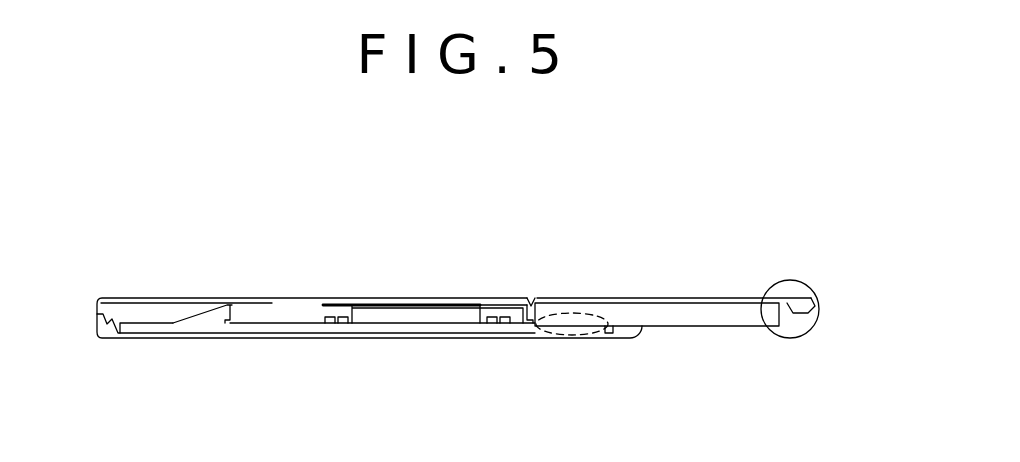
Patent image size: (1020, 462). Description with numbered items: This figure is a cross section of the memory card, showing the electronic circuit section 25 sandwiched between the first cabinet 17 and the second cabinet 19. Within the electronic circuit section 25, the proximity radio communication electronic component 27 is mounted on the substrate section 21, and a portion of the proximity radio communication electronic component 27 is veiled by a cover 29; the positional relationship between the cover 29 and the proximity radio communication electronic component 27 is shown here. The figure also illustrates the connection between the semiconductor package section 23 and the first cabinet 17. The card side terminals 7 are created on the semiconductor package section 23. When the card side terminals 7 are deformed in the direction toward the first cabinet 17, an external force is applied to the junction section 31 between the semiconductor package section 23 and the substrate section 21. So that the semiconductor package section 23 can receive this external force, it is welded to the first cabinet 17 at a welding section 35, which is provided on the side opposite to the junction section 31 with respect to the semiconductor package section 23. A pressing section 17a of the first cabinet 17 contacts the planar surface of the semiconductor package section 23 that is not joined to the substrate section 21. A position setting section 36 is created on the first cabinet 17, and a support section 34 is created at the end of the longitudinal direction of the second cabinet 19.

The electronic circuit section 25 is at (207, 162).
The cover 29 is at (228, 306).
The substrate section 21 is at (294, 330).
The proximity radio communication electronic component 27 is at (400, 317).
The first cabinet 17 is at (496, 298).
The position setting section 36 is at (533, 306).
The semiconductor package section 23 is at (617, 318).
The pressing section 17a is at (677, 298).
The welding section 35 is at (789, 280).
The second cabinet 19 is at (488, 338).
The junction section 31 is at (575, 335).
The support section 34 is at (623, 333).
The card side terminals 7 is at (712, 350).